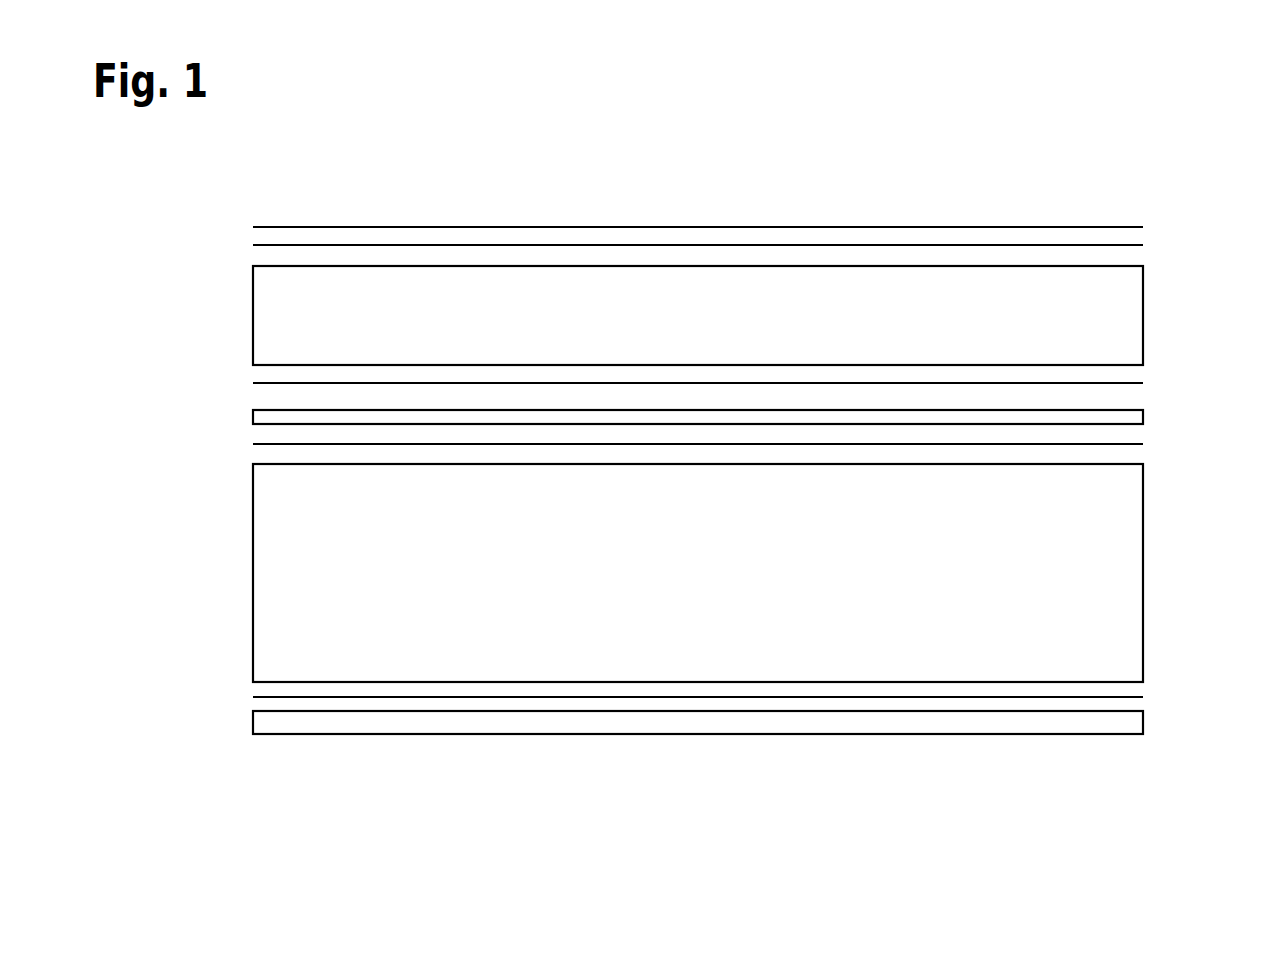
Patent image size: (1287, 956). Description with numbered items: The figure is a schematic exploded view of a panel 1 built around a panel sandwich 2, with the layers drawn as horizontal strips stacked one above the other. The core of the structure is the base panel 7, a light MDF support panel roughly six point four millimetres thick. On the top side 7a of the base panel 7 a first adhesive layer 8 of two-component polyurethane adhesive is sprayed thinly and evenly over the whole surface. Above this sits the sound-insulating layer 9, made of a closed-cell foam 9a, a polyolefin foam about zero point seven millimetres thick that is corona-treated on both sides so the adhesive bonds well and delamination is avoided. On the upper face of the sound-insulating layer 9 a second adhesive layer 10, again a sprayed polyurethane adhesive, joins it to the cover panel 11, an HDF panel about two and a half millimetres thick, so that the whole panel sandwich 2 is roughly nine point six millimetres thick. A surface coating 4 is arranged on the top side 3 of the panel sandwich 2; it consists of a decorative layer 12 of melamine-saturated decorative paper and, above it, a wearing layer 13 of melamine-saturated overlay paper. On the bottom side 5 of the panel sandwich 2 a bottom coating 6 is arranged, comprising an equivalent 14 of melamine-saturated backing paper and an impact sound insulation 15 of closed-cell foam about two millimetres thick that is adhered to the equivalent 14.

The panel 1 is at (698, 157).
The panel sandwich 2 is at (218, 268).
The top side 3 is at (392, 265).
The surface coating 4 is at (221, 227).
The bottom side 5 is at (447, 682).
The bottom coating 6 is at (216, 695).
The base panel 7 is at (1122, 582).
The top side of the base panel 7a is at (1137, 464).
The first adhesive layer 8 is at (1138, 444).
The sound-insulating layer 9 is at (1195, 386).
The closed-cell foam 9a is at (1138, 416).
The second adhesive layer 10 is at (1135, 383).
The cover panel 11 is at (1115, 320).
The decorative layer 12 is at (1137, 246).
The wearing layer 13 is at (1088, 227).
The equivalent 14 is at (1130, 697).
The impact sound insulation 15 is at (1130, 720).